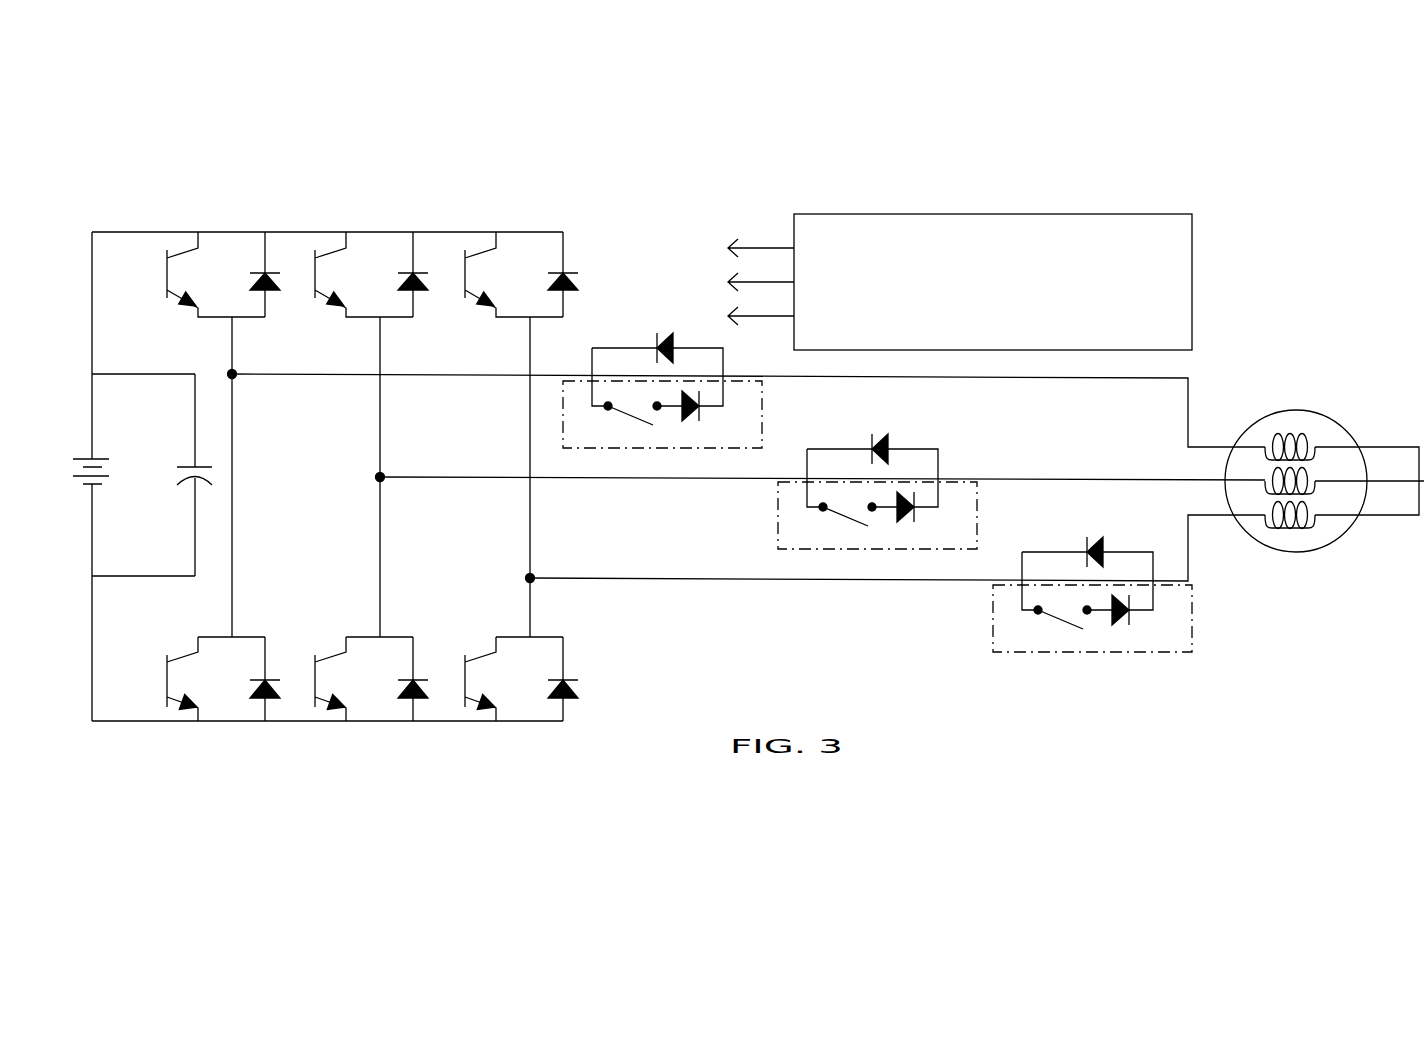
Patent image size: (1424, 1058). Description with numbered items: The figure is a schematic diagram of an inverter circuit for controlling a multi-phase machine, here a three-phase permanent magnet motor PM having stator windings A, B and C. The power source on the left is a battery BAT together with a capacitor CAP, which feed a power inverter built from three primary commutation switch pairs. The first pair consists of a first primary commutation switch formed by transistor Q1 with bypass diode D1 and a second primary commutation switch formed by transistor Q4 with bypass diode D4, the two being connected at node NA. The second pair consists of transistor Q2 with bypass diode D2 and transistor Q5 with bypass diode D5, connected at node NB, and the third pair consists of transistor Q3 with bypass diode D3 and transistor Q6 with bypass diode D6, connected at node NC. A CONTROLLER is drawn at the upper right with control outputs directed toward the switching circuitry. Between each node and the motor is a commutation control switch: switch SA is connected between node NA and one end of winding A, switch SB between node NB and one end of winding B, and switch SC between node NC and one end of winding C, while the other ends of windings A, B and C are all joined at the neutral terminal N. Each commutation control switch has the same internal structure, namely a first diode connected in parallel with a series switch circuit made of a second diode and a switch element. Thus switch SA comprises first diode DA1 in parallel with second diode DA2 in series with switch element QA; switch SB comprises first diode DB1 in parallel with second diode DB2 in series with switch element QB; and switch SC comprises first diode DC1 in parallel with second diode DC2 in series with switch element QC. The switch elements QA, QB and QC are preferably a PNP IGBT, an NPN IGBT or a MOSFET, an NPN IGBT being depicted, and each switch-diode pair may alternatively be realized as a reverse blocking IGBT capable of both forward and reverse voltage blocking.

The primary commutation switch Q1 is at (216, 260).
The primary commutation switch Q2 is at (364, 260).
The primary commutation switch Q3 is at (513, 260).
The primary commutation switch Q4 is at (216, 694).
The primary commutation switch Q5 is at (364, 694).
The primary commutation switch Q6 is at (513, 694).
The bypass diode D1 is at (264, 260).
The bypass diode D2 is at (412, 260).
The bypass diode D3 is at (562, 260).
The bypass diode D4 is at (264, 694).
The bypass diode D5 is at (412, 694).
The bypass diode D6 is at (562, 694).
The battery BAT is at (134, 475).
The capacitor CAP is at (179, 475).
The node NA is at (232, 374).
The node NB is at (380, 477).
The node NC is at (530, 578).
The controller CONTROLLER is at (960, 282).
The commutation control switch SA is at (763, 426).
The commutation control switch SB is at (775, 516).
The commutation control switch SC is at (990, 618).
The switch element QA is at (619, 421).
The switch element QB is at (833, 522).
The switch element QC is at (1049, 625).
The first diode DA1 is at (690, 339).
The second diode DA2 is at (716, 415).
The first diode DB1 is at (906, 441).
The second diode DB2 is at (931, 517).
The first diode DC1 is at (1122, 543).
The second diode DC2 is at (1146, 620).
The permanent magnet motor PM is at (1296, 457).
The stator winding A is at (748, 410).
The stator winding B is at (822, 468).
The stator winding C is at (897, 548).
The neutral terminal N is at (1369, 502).